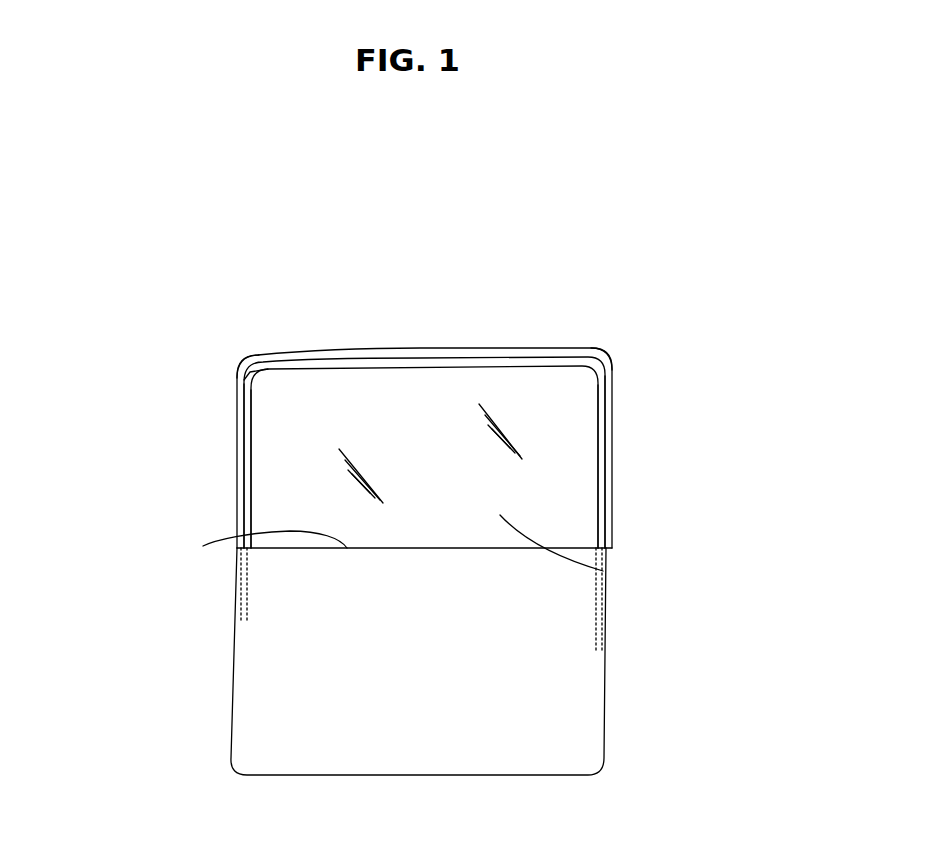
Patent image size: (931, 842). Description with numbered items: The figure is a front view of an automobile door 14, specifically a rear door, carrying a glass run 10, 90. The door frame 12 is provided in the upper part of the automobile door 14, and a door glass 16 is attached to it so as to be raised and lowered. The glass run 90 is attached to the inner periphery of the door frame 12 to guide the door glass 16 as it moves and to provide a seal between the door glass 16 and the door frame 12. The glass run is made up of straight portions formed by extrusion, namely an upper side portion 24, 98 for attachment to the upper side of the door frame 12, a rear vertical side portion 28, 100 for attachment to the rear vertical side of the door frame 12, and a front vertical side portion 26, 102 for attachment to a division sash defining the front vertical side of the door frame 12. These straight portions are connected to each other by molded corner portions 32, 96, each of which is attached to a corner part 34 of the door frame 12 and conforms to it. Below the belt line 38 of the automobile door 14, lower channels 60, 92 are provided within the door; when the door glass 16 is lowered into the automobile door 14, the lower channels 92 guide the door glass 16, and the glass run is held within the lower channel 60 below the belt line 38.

The glass run 10 is at (424, 401).
The door frame 12 is at (545, 345).
The automobile door 14 is at (253, 717).
The door glass 16 is at (606, 572).
The upper side portion 24 is at (424, 401).
The front vertical side portion 26 is at (159, 469).
The rear vertical side portion 28 is at (697, 466).
The corner portions 32 is at (431, 438).
The corner parts 34 is at (250, 362).
The belt line 38 is at (203, 546).
The lower channel 60 is at (457, 601).
The glass run 90 is at (445, 378).
The lower channels 92 is at (238, 593).
The corner portions 96 is at (245, 380).
The upper side portion 98 is at (485, 357).
The rear vertical side portion 100 is at (600, 490).
The front vertical side portion 102 is at (244, 497).